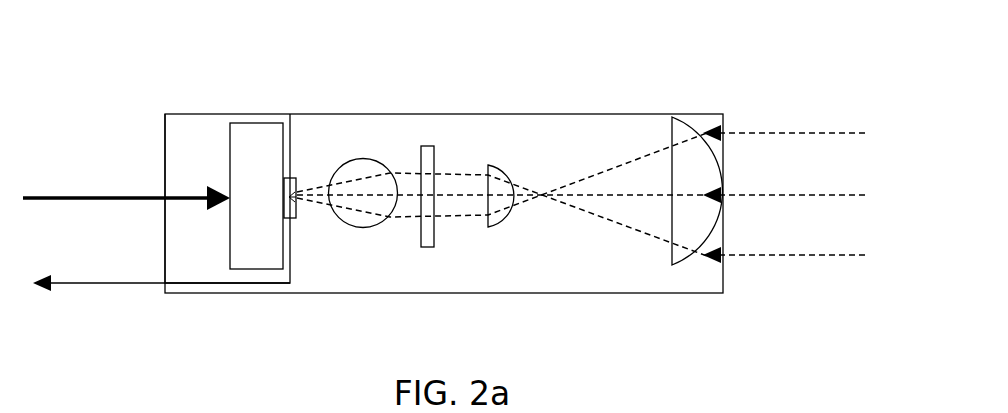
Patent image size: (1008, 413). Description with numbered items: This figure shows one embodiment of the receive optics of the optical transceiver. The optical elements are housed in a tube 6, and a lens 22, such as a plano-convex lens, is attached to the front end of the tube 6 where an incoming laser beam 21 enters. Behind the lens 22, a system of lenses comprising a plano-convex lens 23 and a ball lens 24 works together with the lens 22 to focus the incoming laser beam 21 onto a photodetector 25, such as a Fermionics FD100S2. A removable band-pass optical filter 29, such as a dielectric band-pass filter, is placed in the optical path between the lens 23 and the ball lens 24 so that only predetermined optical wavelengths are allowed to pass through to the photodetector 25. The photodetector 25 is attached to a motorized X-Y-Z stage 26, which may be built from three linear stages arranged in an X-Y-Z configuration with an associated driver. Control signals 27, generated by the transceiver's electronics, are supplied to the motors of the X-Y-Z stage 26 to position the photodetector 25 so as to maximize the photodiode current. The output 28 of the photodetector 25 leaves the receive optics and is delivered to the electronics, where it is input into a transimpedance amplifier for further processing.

The tube 6 is at (621, 114).
The incoming laser beam 21 is at (797, 130).
The lens 22 is at (683, 123).
The lens 23 is at (477, 180).
The ball lens 24 is at (365, 167).
The photodetector 25 is at (288, 178).
The motorized X-Y-Z stage 26 is at (248, 143).
The control signals 27 is at (115, 197).
The output 28 is at (95, 283).
The removable band-pass optical filter 29 is at (428, 147).